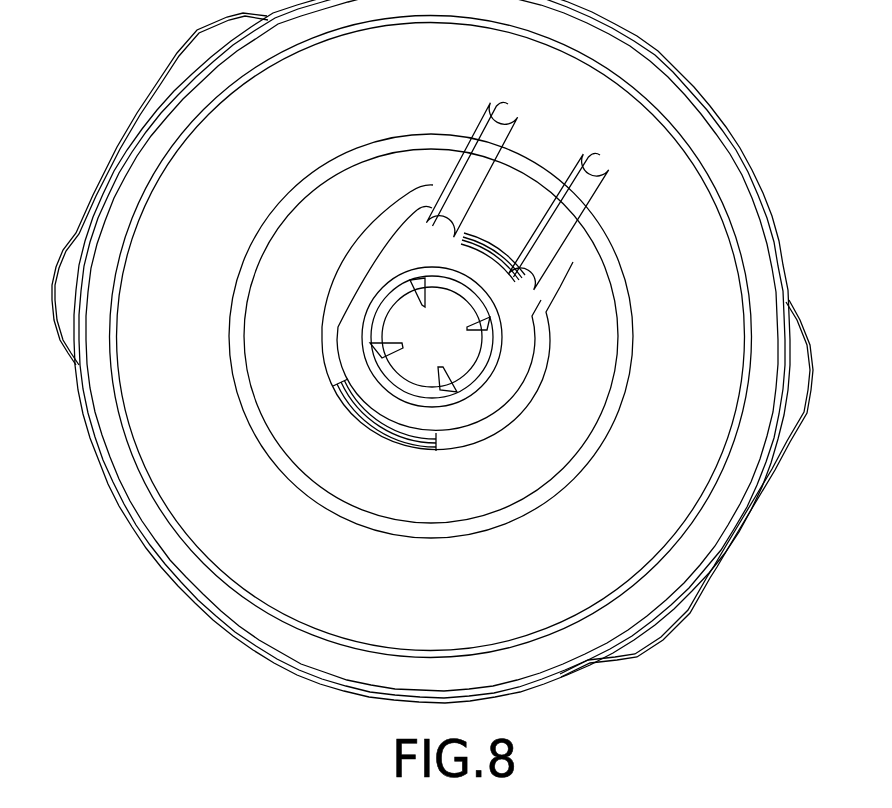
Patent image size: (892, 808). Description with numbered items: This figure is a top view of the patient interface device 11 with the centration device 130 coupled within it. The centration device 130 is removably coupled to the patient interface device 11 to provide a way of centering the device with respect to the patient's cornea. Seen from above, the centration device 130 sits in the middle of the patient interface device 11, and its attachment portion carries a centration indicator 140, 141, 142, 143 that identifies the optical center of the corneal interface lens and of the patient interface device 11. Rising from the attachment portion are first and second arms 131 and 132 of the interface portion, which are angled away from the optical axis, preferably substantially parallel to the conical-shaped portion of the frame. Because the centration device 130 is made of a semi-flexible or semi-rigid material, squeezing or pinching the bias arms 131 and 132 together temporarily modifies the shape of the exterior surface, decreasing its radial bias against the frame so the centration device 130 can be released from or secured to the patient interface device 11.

The patient interface device 11 is at (700, 137).
The centration device 130 is at (403, 240).
The first arm 131 is at (497, 117).
The second arm 132 is at (593, 168).
The centration indicator 140 is at (445, 380).
The centration indicator 141 is at (488, 325).
The centration indicator 142 is at (413, 293).
The centration indicator 143 is at (383, 355).